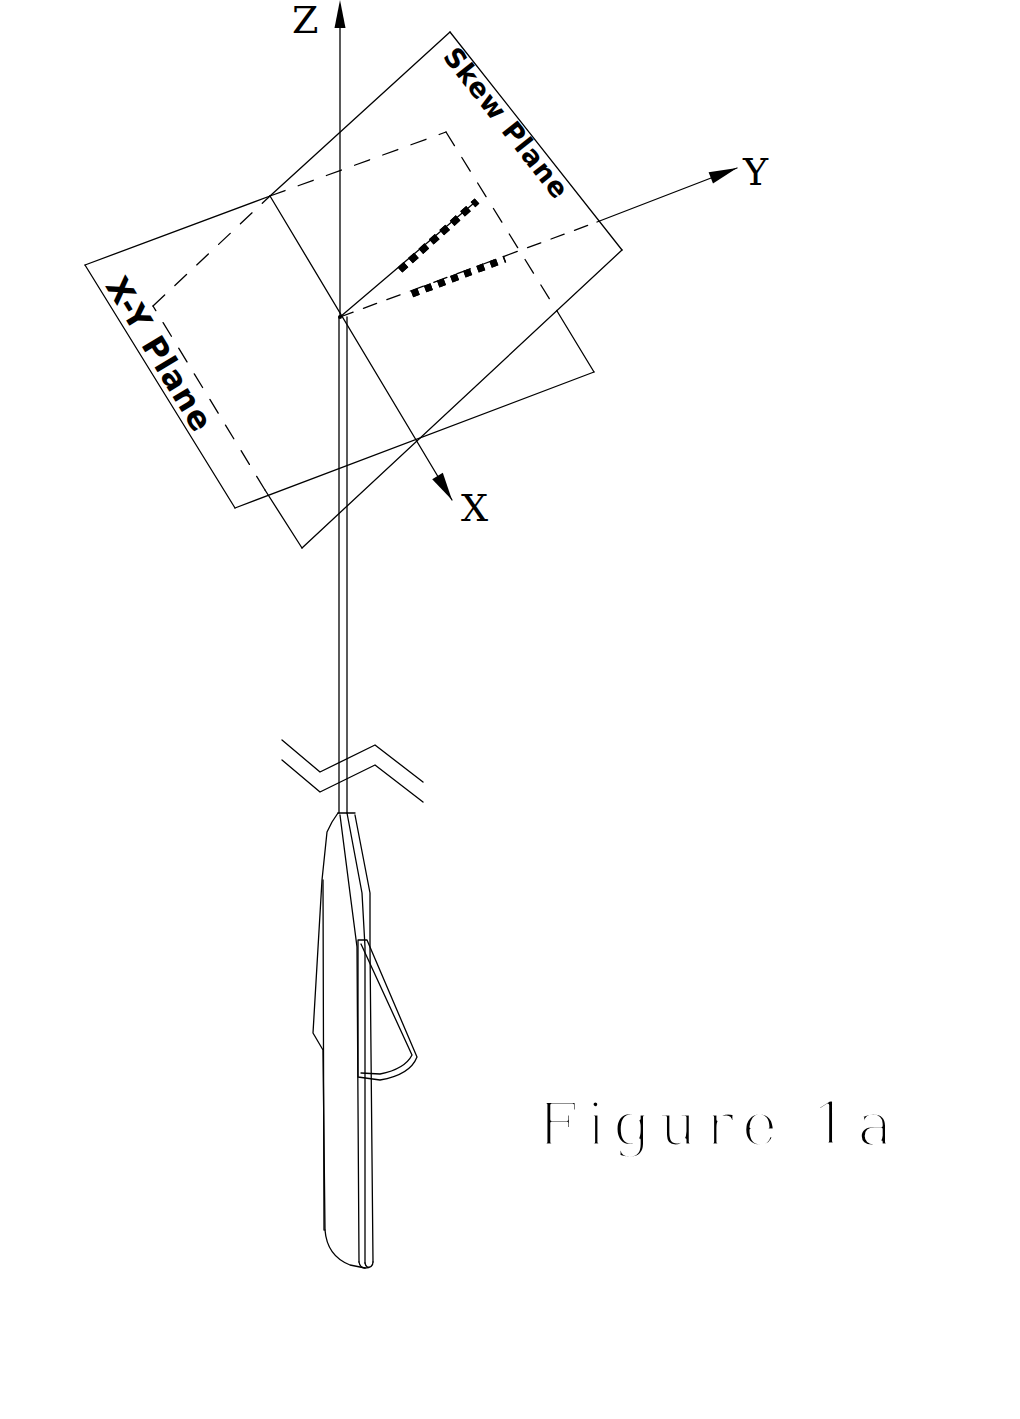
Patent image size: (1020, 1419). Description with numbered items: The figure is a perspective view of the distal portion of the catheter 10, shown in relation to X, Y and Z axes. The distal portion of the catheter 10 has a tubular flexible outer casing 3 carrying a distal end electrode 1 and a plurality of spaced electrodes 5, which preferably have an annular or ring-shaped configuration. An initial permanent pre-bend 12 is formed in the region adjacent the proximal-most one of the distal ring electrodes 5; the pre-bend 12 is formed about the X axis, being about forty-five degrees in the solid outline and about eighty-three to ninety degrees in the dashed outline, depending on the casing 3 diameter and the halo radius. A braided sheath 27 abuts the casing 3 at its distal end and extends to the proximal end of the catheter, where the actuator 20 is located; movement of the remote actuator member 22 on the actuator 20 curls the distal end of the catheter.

The distal end electrode 1 is at (485, 203).
The tubular flexible outer casing 3 is at (363, 320).
The spaced electrodes 5 is at (412, 252).
The distal portion of the catheter 10 is at (430, 216).
The pre-bend 12 is at (338, 318).
The actuator 20 is at (305, 1102).
The remote actuator member 22 is at (407, 1015).
The braided sheath 27 is at (352, 578).